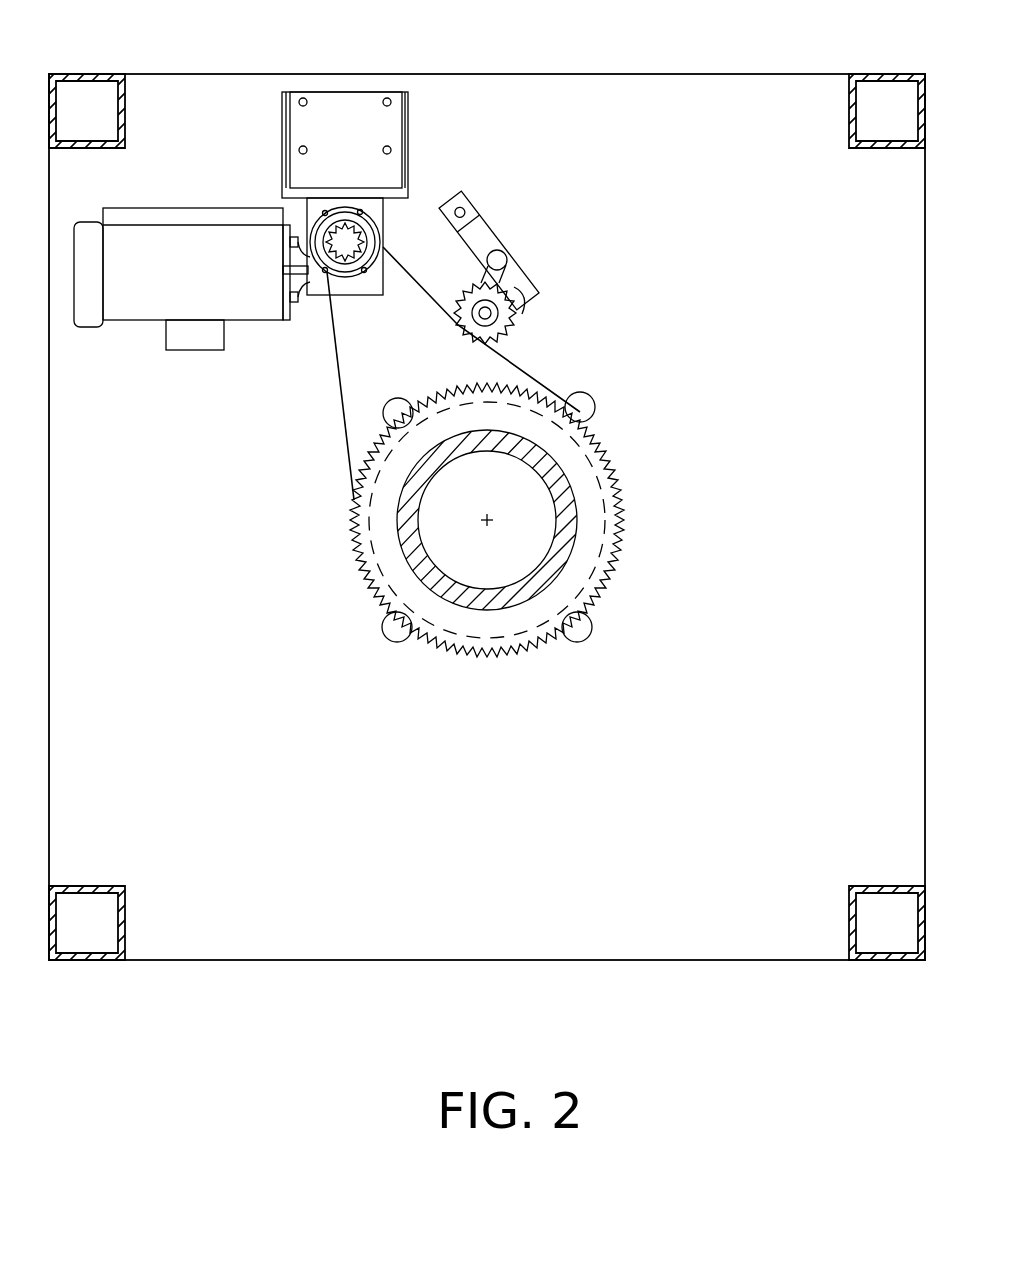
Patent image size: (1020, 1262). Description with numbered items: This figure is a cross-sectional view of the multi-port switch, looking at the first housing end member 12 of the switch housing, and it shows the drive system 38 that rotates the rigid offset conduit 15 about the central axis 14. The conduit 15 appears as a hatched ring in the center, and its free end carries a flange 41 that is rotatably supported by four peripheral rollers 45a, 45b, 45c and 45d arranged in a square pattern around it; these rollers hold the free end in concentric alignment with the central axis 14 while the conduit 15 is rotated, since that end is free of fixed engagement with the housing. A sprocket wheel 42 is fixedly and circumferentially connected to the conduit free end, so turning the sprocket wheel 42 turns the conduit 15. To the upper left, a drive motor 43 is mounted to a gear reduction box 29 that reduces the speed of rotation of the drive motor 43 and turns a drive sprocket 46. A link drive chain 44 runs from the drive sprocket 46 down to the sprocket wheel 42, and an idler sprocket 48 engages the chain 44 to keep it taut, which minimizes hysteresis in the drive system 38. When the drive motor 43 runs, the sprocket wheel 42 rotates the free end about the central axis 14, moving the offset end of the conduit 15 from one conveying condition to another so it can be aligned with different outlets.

The first housing end member 12 is at (778, 962).
The drive system 38 is at (249, 73).
The gear reduction box 29 is at (395, 107).
The drive motor 43 is at (188, 300).
The drive sprocket 46 is at (365, 228).
The idler sprocket 48 is at (500, 310).
The link drive chain 44 is at (521, 523).
The sprocket wheel 42 is at (594, 553).
The flange 41 is at (582, 460).
The offset conduit 15 is at (423, 480).
The central axis 14 is at (487, 520).
The peripheral roller 45a is at (595, 632).
The peripheral roller 45b is at (399, 643).
The peripheral roller 45c is at (389, 400).
The peripheral roller 45d is at (596, 400).